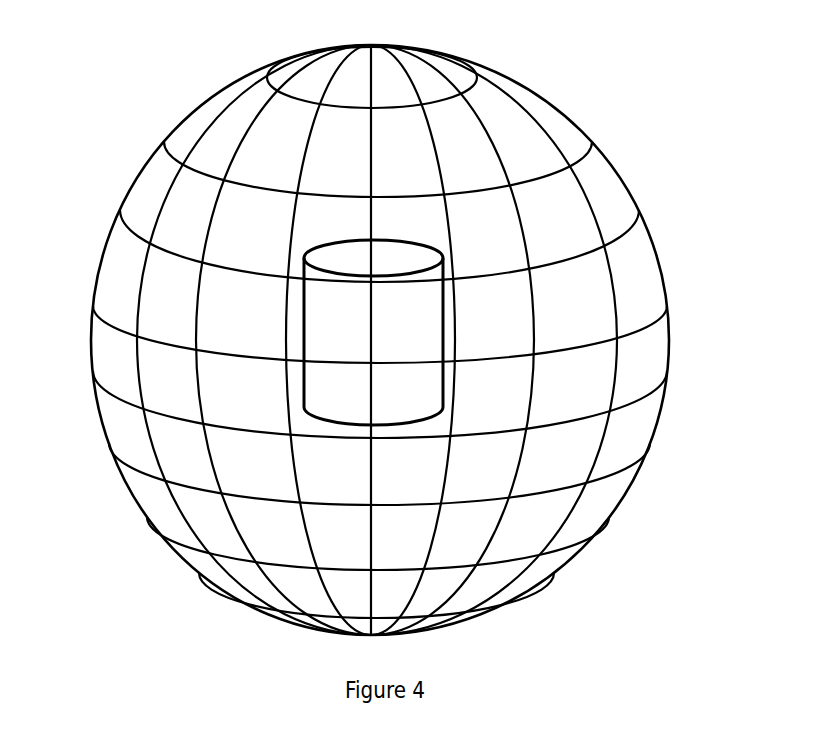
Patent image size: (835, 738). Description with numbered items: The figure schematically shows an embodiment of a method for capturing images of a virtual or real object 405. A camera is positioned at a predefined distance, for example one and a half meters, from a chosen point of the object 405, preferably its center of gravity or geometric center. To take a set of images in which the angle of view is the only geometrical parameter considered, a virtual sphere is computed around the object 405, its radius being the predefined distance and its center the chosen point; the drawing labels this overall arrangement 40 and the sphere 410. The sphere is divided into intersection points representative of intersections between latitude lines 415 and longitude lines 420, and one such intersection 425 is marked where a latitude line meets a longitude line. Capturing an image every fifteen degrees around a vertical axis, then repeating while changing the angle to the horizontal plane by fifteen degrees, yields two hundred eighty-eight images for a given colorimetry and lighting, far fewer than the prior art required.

The spherical grid representation 40 is at (129, 90).
The object 405 is at (320, 312).
The sphere surface 410 is at (137, 180).
The latitude line 415 is at (95, 381).
The latitude line 420 is at (177, 510).
The longitude line 425 is at (140, 407).